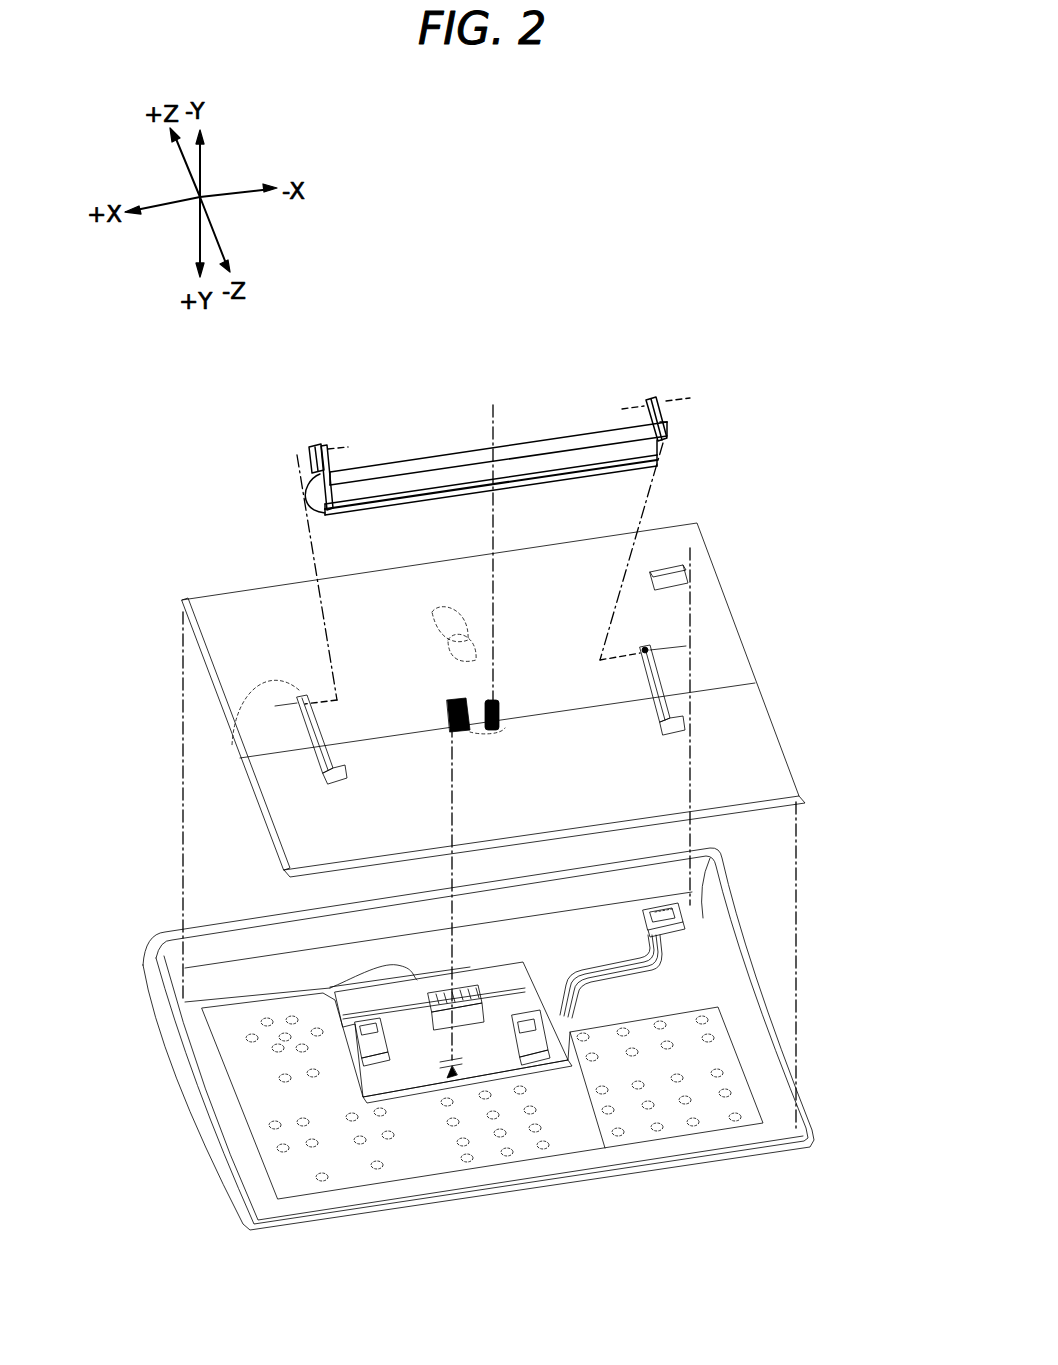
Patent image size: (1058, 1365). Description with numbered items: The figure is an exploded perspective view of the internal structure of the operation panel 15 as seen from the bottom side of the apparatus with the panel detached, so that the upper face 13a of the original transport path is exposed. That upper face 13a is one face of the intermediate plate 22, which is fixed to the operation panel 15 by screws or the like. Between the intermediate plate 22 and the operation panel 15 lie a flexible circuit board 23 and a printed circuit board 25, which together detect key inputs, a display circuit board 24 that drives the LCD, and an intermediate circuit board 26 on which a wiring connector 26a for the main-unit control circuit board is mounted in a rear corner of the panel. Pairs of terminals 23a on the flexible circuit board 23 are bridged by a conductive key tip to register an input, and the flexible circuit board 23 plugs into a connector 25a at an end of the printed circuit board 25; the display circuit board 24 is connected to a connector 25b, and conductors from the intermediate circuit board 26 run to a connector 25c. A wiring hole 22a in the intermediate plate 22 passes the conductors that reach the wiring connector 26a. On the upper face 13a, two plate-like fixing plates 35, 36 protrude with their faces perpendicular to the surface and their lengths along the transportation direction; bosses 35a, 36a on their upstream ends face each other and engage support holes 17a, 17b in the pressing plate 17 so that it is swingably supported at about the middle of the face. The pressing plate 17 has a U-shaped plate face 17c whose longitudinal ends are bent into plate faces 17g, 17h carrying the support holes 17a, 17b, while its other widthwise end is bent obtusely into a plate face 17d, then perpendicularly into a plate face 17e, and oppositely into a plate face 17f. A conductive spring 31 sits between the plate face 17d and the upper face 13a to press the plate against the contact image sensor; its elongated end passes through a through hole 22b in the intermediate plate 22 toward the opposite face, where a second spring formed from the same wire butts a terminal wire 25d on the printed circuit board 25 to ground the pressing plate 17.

The upper face of the transport path 13a is at (330, 812).
The operation panel 15 is at (479, 1051).
The pressing plate 17 is at (500, 443).
The support hole 17a is at (297, 445).
The support hole 17b is at (670, 393).
The plate face 17c is at (480, 452).
The plate face 17d is at (453, 484).
The plate face 17e is at (470, 497).
The plate face 17f is at (560, 480).
The plate face 17g is at (306, 505).
The plate face 17h is at (665, 418).
The intermediate plate 22 is at (527, 700).
The wiring hole 22a is at (672, 582).
The through hole 22b is at (470, 735).
The flexible circuit board 23 is at (482, 1111).
The terminals 23a is at (578, 1122).
The display circuit board 24 is at (330, 990).
The printed circuit board 25 is at (366, 1091).
The connector 25a is at (360, 1045).
The connector 25b is at (480, 985).
The connector 25c is at (540, 1050).
The terminal wire 25d is at (450, 1070).
The intermediate circuit board 26 is at (665, 962).
The wiring connector 26a is at (682, 925).
The spring 31 is at (503, 730).
The fixing plate 35 is at (330, 782).
The boss 35a is at (244, 729).
The fixing plate 36 is at (660, 735).
The boss 36a is at (650, 648).